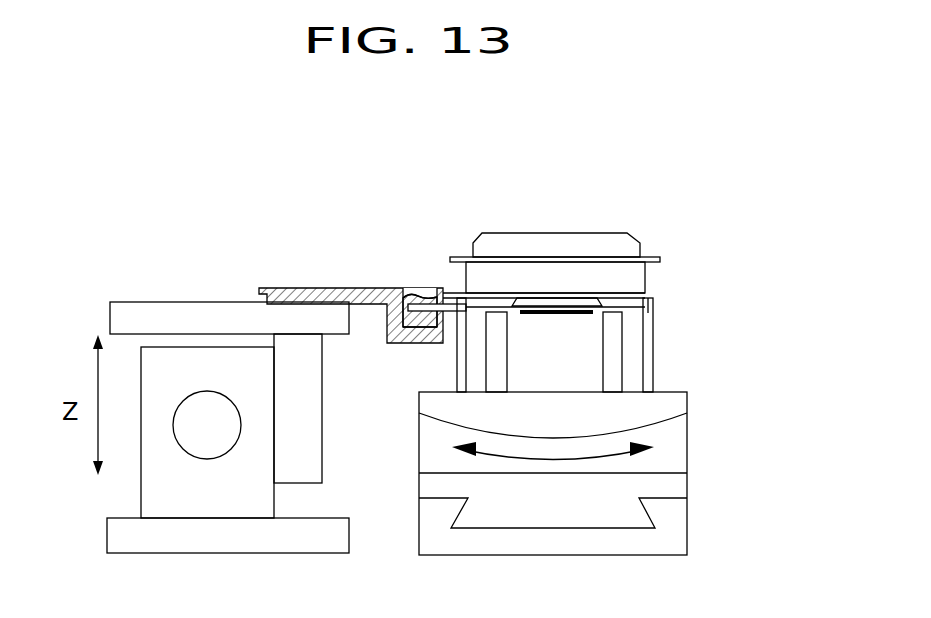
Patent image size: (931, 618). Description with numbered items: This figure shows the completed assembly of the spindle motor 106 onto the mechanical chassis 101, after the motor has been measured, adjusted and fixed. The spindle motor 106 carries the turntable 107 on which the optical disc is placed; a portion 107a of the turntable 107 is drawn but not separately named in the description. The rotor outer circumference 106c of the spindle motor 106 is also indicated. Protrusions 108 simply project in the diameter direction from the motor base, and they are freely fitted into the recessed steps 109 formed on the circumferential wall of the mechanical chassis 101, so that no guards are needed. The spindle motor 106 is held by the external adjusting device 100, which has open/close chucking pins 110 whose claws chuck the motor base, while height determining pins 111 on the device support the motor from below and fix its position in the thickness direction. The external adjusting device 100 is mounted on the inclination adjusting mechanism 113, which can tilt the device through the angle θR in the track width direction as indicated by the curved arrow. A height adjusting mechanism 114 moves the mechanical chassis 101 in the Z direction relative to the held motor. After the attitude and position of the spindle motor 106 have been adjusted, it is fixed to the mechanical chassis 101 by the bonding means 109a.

The external adjusting device 100 is at (556, 332).
The mechanical chassis 101 is at (310, 288).
The spindle motor 106 is at (570, 233).
The rotor outer circumference 106c is at (648, 287).
The turntable 107 is at (657, 265).
The flange plate 107a is at (655, 256).
The protrusions 108 is at (430, 300).
The recessed steps 109 is at (415, 288).
The bonding means 109a is at (355, 229).
The chucking pins 110 is at (653, 340).
The height determining pins 111 is at (615, 378).
The inclination adjusting mechanism 113 is at (593, 510).
The height adjusting mechanism 114 is at (194, 374).